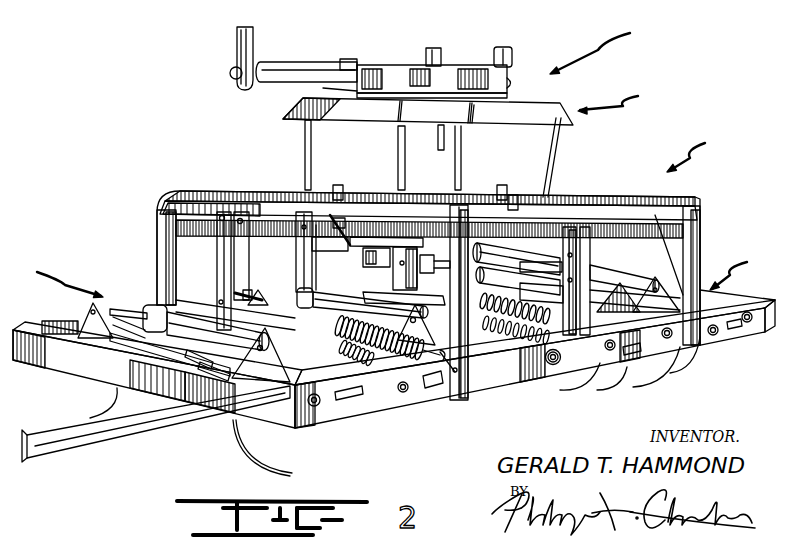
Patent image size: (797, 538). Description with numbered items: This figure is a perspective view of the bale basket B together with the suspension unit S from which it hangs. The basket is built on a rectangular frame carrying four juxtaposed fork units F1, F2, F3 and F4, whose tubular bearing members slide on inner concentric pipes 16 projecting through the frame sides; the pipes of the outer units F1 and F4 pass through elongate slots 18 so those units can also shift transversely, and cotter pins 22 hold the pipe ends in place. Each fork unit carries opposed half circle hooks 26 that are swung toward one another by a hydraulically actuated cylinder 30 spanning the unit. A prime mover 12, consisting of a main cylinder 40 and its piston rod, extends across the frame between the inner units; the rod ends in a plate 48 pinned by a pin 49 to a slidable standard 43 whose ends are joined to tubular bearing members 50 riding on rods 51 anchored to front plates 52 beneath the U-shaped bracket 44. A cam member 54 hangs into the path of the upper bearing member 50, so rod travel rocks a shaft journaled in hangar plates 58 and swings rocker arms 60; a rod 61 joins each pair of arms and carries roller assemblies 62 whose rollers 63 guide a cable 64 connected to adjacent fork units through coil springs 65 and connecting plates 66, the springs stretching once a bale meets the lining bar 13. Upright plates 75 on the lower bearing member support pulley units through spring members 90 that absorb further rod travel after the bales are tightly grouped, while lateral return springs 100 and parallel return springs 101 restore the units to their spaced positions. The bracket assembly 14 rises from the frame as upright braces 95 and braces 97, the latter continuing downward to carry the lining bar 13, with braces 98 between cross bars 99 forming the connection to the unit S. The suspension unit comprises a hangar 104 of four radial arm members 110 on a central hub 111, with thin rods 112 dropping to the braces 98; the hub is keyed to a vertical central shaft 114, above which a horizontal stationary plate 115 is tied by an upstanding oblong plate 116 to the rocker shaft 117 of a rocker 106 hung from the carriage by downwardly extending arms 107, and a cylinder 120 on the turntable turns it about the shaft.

The prime mover 12 is at (375, 286).
The lining bar 13 is at (97, 443).
The bracket assembly 14 is at (409, 288).
The inner concentric pipes 16 is at (313, 410).
The elongate slots 18 is at (53, 323).
The cotter pins 22 is at (319, 404).
The half circle hooks 26 is at (110, 398).
The hydraulically actuated cylinder 30 is at (187, 327).
The main cylinder 40 is at (541, 267).
The standard 43 is at (400, 262).
The U-shaped bracket 44 is at (550, 223).
The plate 48 is at (365, 258).
The pin 49 is at (434, 262).
The tubular bearing members 50 is at (511, 197).
The rods 51 is at (337, 222).
The front plates 52 is at (297, 230).
The cam member 54 is at (363, 257).
The hangar plates 58 is at (249, 235).
The rocker arms 60 is at (218, 260).
The rod 61 is at (218, 302).
The roller assemblies 62 is at (253, 297).
The roller 63 is at (247, 292).
The cable 64 is at (260, 303).
The coil springs 65 is at (427, 380).
The connecting plate 66 is at (443, 358).
The upright plates 75 is at (603, 390).
The spring members 90 is at (557, 350).
The upright braces 95 is at (702, 240).
The braces 97 is at (158, 260).
The braces 98 is at (337, 187).
The cross bars 99 is at (413, 187).
The lateral return springs 100 is at (200, 347).
The parallel return springs 101 is at (213, 367).
The hangar 104 is at (626, 100).
The rocker 106 is at (237, 58).
The downwardly extending arms 107 is at (237, 38).
The arm members 110 is at (285, 112).
The central hub 111 is at (441, 130).
The elongate rods 112 is at (398, 140).
The central shaft 114 is at (442, 53).
The horizontal stationary plate 115 is at (510, 95).
The upstanding oblong plate 116 is at (382, 62).
The rocker shaft 117 is at (230, 73).
The cylinder 120 is at (300, 62).
The suspension unit S is at (602, 52).
The bale basket B is at (693, 151).
The fork unit F1 is at (58, 280).
The fork unit F2 is at (570, 390).
The fork unit F3 is at (672, 352).
The fork unit F4 is at (683, 282).